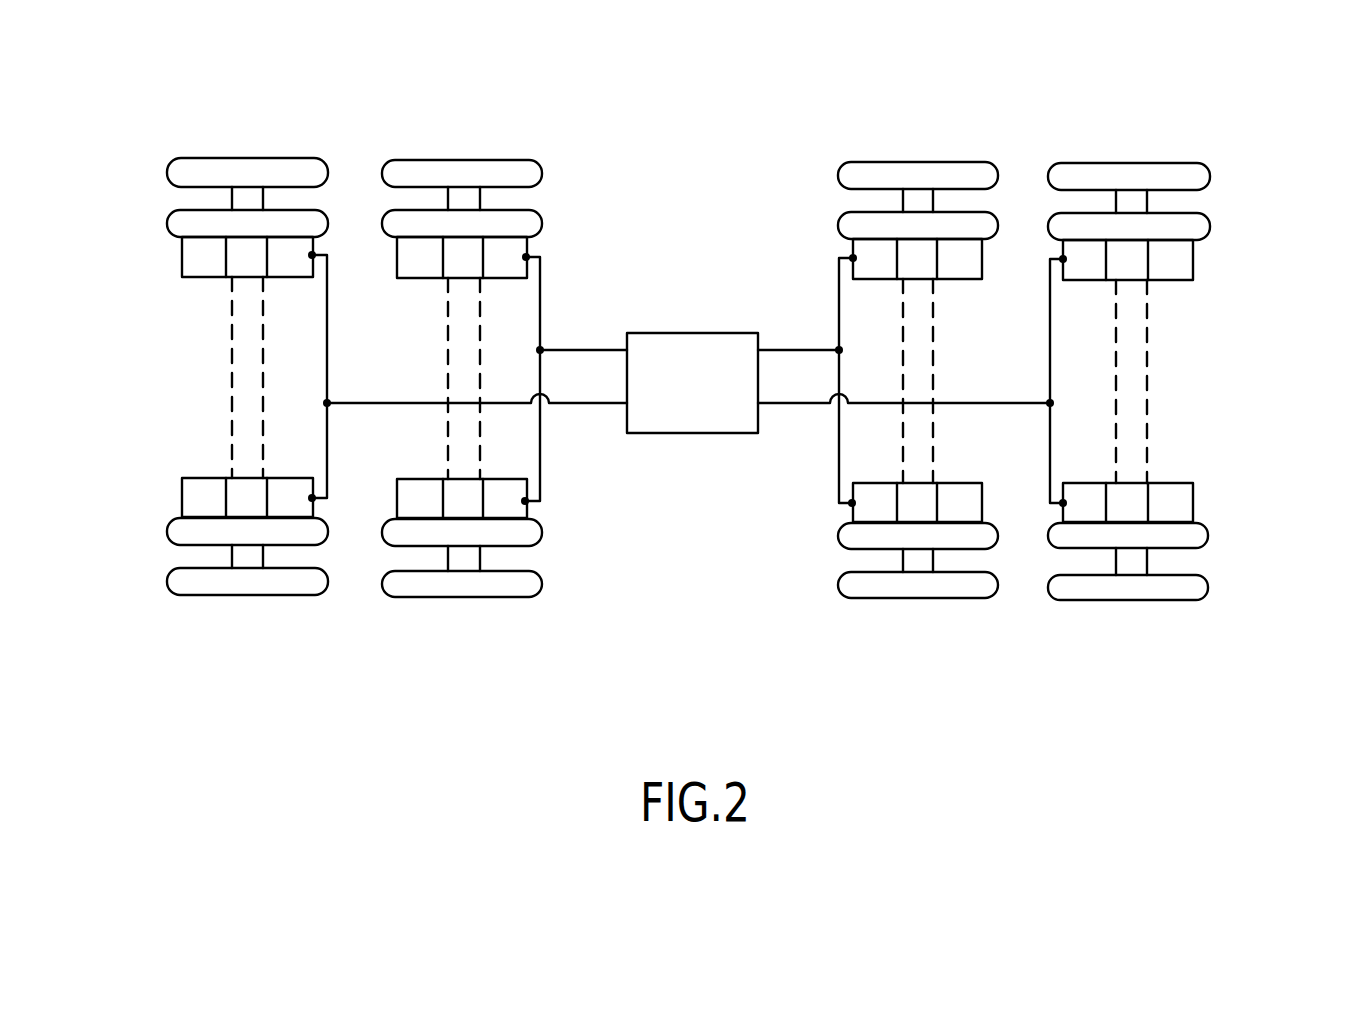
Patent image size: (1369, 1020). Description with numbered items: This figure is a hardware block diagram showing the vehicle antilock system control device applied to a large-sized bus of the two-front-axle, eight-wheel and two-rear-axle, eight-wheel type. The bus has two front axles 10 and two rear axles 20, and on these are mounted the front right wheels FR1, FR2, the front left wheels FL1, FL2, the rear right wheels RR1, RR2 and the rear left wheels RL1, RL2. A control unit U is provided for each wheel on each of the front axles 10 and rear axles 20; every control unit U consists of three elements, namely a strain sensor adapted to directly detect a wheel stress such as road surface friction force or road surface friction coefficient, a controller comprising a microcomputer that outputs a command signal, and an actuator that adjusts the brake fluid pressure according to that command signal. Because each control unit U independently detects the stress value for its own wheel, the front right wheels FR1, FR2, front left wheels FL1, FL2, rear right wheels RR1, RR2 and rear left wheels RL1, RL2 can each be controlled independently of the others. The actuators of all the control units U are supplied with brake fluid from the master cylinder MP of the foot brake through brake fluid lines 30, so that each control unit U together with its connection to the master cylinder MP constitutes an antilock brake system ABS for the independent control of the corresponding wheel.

The front axle 10 is at (247, 350).
The rear axle 20 is at (913, 443).
The brake fluid line 30 is at (597, 350).
The master cylinder MP is at (685, 333).
The antilock brake system ABS is at (180, 258).
The control unit U is at (300, 278).
The front right wheel FR1 is at (233, 158).
The front right wheel FR2 is at (452, 160).
The front left wheel FL1 is at (233, 595).
The front left wheel FL2 is at (462, 597).
The rear right wheel RR1 is at (908, 162).
The rear right wheel RR2 is at (1117, 163).
The rear left wheel RL1 is at (910, 598).
The rear left wheel RL2 is at (1135, 600).